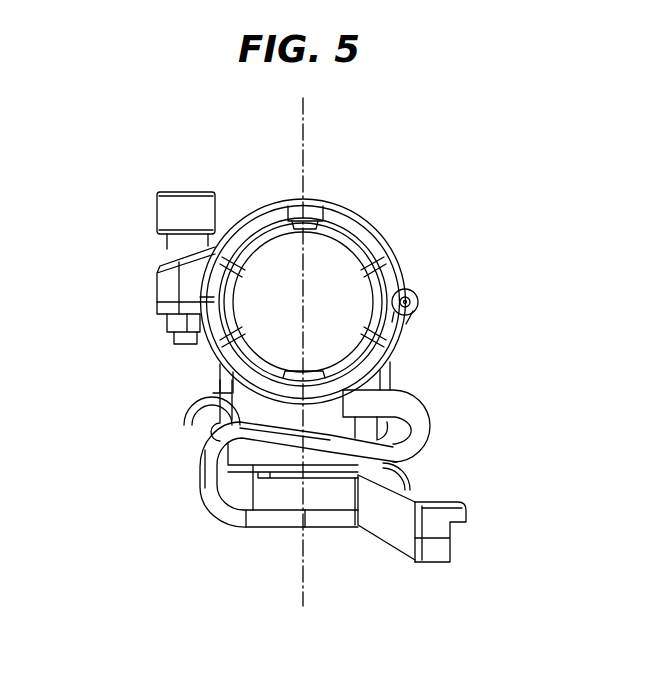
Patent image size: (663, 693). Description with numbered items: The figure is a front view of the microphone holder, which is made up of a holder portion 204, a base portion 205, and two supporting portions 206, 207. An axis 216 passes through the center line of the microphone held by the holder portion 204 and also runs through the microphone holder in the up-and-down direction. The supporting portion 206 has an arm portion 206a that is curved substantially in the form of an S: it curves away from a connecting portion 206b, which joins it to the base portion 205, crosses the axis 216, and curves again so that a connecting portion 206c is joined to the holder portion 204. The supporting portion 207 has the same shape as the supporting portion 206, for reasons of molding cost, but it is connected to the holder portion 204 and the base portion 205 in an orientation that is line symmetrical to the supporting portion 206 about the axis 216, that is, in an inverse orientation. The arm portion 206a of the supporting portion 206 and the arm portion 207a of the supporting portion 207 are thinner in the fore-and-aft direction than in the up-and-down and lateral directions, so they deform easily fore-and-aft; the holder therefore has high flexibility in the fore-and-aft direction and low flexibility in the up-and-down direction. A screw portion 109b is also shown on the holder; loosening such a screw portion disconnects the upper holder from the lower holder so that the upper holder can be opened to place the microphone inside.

The axis 216 is at (301, 140).
The holder portion 204 is at (398, 248).
The screw portion 109b is at (160, 283).
The supporting portion 207 is at (205, 398).
The arm portion 207a is at (206, 430).
The supporting portion 206 is at (215, 517).
The arm portion 206a is at (212, 478).
The connecting portion 206b is at (282, 515).
The connecting portion 206c is at (372, 400).
The base portion 205 is at (437, 530).